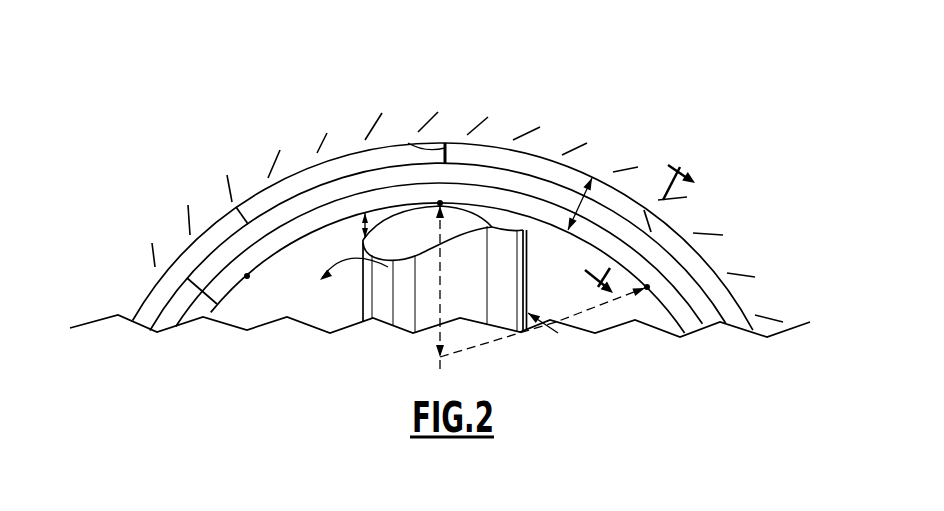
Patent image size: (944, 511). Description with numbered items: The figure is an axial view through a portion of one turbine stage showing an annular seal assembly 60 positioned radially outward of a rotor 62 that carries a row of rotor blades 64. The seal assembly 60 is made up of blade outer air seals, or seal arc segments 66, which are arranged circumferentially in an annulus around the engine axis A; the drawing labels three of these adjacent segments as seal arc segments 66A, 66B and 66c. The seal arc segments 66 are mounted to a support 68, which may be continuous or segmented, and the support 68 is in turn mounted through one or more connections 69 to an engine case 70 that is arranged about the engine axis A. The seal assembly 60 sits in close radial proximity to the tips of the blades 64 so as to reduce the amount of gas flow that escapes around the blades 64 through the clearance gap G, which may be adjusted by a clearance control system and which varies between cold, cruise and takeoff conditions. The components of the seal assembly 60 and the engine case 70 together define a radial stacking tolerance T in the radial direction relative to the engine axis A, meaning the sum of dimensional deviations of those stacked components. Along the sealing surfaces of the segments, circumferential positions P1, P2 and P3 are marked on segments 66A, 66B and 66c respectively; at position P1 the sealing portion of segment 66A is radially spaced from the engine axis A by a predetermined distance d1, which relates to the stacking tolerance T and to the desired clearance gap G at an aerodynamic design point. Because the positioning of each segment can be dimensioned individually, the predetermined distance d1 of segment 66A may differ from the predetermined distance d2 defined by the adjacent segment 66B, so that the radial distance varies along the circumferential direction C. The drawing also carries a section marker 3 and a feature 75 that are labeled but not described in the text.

The seal assembly 60 is at (338, 77).
The rotor 62 is at (548, 320).
The rotor blades 64 is at (362, 312).
The seal arc segments 66 is at (503, 187).
The seal arc segment 66A is at (383, 197).
The seal arc segment 66B is at (660, 282).
The seal arc segment 66c is at (225, 280).
The support 68 is at (470, 161).
The connections 69 is at (408, 143).
The engine case 70 is at (683, 232).
The seal slot 75 is at (342, 178).
The section line 3- 3 is at (633, 223).
The engine axis A is at (437, 357).
The circumferential direction C is at (332, 322).
The clearance gap G is at (360, 233).
The radial stacking tolerance T is at (592, 180).
The circumferential position P1 is at (437, 211).
The circumferential position P2 is at (247, 276).
The circumferential position P3 is at (647, 290).
The predetermined distance d1 is at (440, 290).
The predetermined distance d2 is at (532, 330).